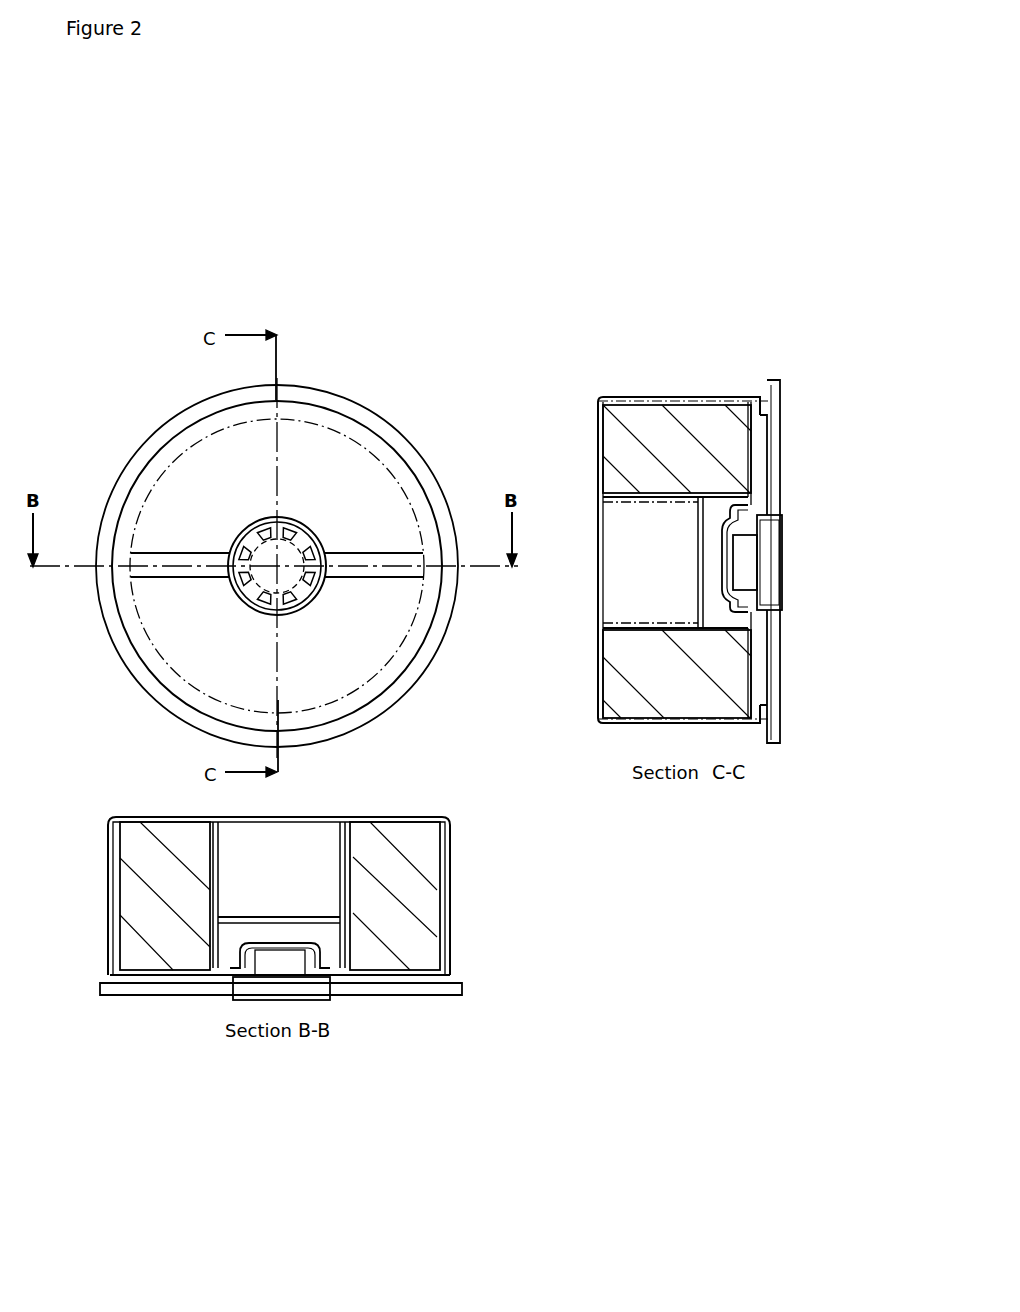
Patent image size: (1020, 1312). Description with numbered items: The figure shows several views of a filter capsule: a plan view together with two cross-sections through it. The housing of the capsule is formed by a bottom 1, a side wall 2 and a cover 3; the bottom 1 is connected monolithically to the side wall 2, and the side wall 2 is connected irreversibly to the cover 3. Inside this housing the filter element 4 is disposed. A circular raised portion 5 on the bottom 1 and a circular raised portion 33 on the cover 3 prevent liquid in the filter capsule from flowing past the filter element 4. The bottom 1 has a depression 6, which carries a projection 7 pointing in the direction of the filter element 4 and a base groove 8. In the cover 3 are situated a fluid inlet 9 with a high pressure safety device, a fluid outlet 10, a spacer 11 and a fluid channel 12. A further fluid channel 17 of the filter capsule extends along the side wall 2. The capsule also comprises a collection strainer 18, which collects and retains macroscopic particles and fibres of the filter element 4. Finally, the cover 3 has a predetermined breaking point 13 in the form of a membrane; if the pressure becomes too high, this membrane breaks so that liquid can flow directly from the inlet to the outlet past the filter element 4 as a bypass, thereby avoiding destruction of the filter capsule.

The bottom 1 is at (598, 443).
The side wall 2 is at (716, 395).
The cover 3 is at (322, 475).
The filter element 4 is at (668, 440).
The circular raised portion 5 is at (607, 655).
The depression 6 is at (660, 568).
The projection 7 is at (660, 498).
The base groove 8 is at (763, 615).
The fluid inlet 9 is at (318, 975).
The fluid outlet 10 is at (294, 552).
The spacer 11 is at (262, 537).
The fluid channel 12 is at (195, 988).
The predetermined breaking point 13 is at (232, 551).
The fluid channel 17 is at (745, 400).
The collection strainer 18 is at (733, 578).
The circular raised portion 33 is at (745, 475).